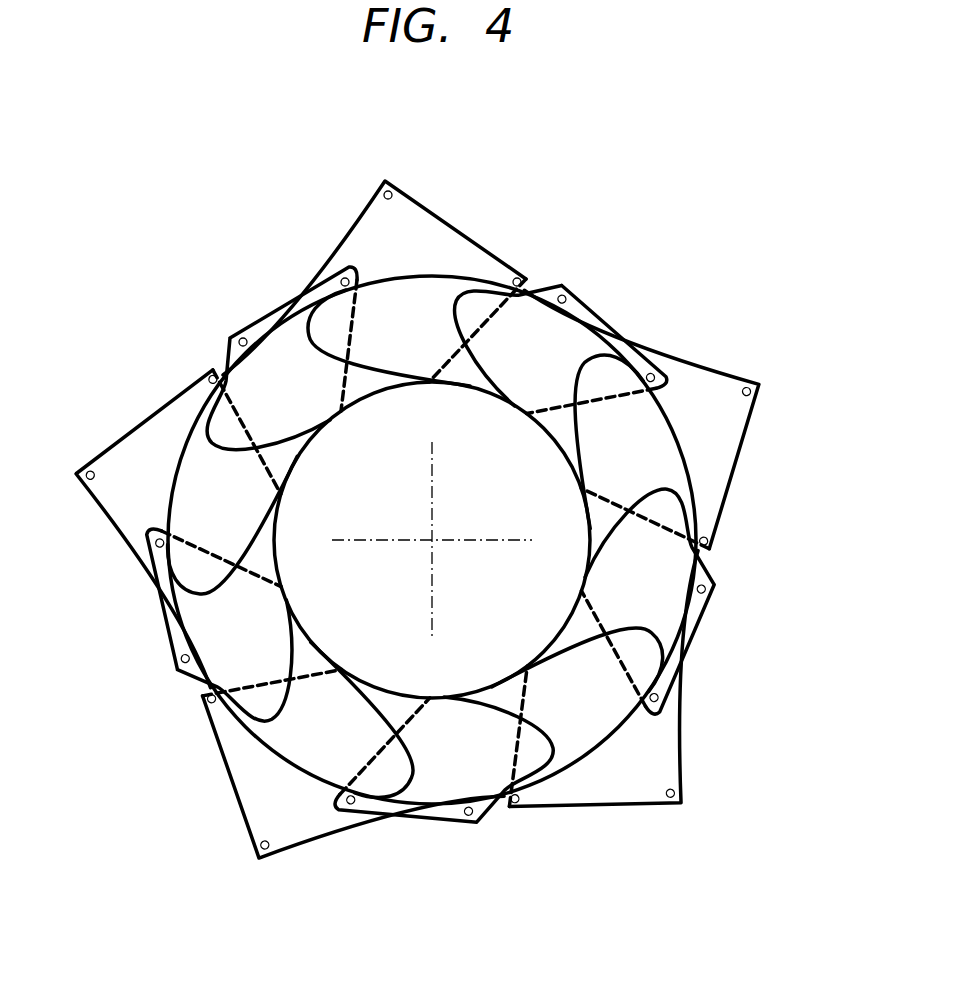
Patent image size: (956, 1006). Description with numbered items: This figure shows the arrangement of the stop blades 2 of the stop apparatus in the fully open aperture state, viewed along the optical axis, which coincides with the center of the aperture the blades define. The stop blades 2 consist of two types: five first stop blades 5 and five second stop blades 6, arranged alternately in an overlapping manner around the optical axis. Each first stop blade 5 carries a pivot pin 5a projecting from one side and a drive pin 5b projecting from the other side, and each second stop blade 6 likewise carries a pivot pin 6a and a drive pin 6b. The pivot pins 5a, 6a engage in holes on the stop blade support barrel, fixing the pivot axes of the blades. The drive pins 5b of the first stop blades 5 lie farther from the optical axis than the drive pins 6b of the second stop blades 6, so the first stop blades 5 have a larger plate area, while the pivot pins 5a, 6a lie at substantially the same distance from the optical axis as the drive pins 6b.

The stop blades 2 is at (603, 196).
The first stop blade 5 is at (430, 230).
The pivot pin 5a is at (520, 272).
The drive pin 5b is at (388, 186).
The second stop blade 6 is at (277, 313).
The pivot pin 6a is at (330, 272).
The drive pin 6b is at (240, 336).